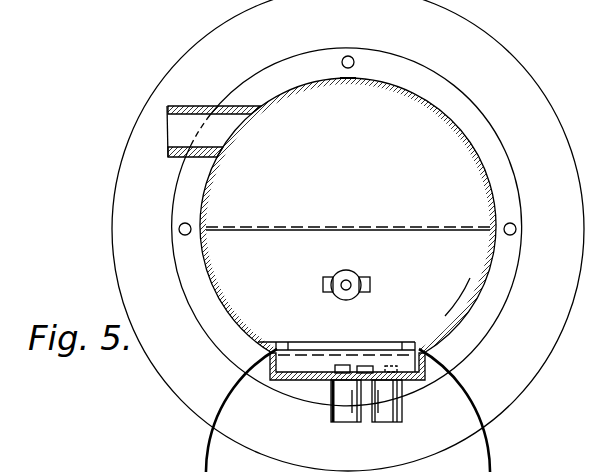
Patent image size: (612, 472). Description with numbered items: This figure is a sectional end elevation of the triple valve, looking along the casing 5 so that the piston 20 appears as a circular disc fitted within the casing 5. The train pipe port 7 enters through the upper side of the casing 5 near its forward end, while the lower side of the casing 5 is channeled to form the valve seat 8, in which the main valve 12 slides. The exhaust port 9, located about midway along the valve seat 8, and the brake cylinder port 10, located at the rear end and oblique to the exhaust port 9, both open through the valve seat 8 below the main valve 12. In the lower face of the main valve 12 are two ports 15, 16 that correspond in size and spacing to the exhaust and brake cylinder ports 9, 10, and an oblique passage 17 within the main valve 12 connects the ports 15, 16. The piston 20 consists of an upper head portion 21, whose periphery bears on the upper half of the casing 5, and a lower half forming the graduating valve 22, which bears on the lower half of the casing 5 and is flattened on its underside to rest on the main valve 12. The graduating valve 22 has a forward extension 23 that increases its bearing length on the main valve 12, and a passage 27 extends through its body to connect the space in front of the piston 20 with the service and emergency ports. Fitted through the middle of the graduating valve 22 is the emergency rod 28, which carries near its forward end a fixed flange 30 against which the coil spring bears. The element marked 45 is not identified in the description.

The valve casing 5 is at (462, 137).
The train pipe port 7 is at (193, 122).
The valve seat 8 is at (424, 372).
The exhaust port 9 is at (350, 418).
The brake cylinder port 10 is at (392, 418).
The main valve 12 is at (283, 367).
The port 15 is at (341, 365).
The port 16 is at (389, 365).
The oblique passage 17 is at (367, 366).
The piston 20 is at (382, 182).
The head portion 21 is at (423, 118).
The graduating valve 22 is at (470, 278).
The forward extension 23 is at (276, 290).
The passage 27 is at (345, 232).
The emergency rod 28 is at (371, 284).
The flange 30 is at (338, 276).
The vent opening 45 is at (349, 77).